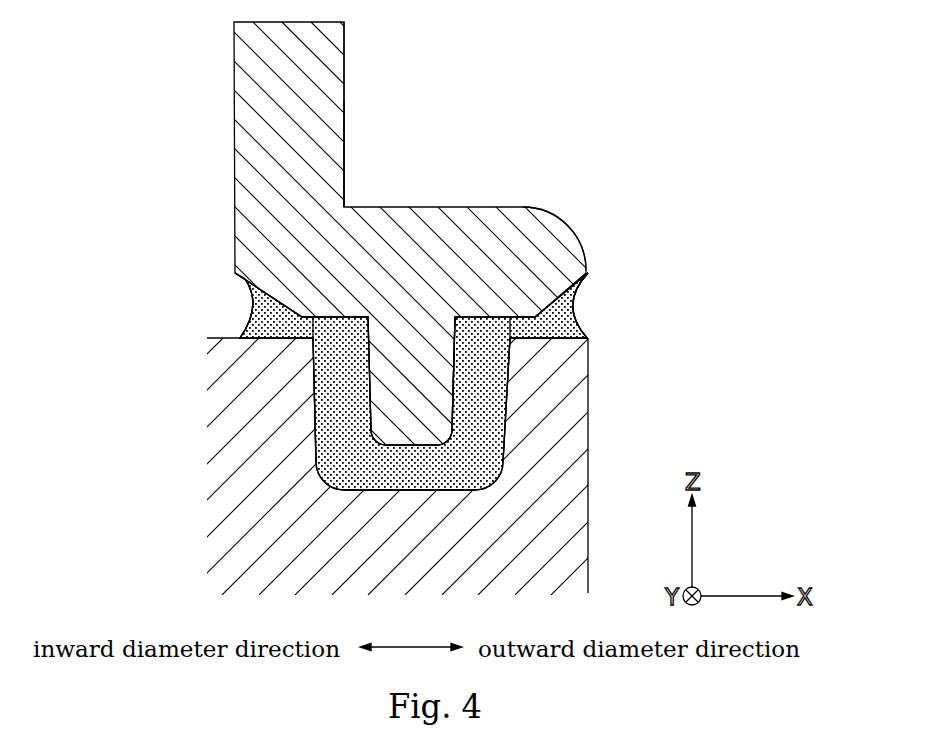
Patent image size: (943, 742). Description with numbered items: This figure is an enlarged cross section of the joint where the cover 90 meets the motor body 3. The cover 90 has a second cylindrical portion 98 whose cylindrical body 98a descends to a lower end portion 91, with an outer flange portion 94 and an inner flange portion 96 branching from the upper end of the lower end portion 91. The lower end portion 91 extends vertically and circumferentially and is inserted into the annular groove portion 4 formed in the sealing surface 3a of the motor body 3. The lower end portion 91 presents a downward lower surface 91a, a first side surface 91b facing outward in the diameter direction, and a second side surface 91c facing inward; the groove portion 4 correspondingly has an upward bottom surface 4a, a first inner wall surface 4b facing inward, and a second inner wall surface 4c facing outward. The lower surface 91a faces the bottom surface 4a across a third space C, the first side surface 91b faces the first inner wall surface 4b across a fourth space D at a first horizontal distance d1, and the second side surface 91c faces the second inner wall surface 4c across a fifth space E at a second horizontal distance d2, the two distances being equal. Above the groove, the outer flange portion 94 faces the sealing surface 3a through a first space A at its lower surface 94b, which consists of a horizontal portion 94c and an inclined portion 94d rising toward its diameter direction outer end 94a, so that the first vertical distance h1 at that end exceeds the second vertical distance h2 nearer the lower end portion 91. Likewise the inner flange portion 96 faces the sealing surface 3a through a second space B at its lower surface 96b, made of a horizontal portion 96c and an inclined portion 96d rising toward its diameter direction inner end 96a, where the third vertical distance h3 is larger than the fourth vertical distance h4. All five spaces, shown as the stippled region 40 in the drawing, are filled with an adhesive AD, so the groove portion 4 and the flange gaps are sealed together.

The cover 90 is at (355, 33).
The second cylindrical portion 98 is at (337, 66).
The cylindrical body 98a is at (337, 120).
The lower end portion 91 is at (400, 420).
The lower surface 91a is at (380, 478).
The first side surface 91b is at (460, 335).
The second side surface 91c is at (342, 320).
The outer flange portion 94 is at (540, 235).
The diameter direction outer end 94a is at (588, 270).
The lower surface 94b is at (668, 276).
The horizontal portion 94c is at (580, 325).
The inclined portion 94d is at (578, 297).
The inner flange portion 96 is at (333, 262).
The diameter direction inner end 96a is at (243, 280).
The lower surface 96b is at (150, 276).
The horizontal portion 96c is at (247, 322).
The inclined portion 96d is at (252, 298).
The seal member (sealing material) 40 is at (655, 444).
The motor body 3 is at (668, 404).
The sealing surface 3a is at (235, 338).
The groove portion 4 is at (413, 457).
The bottom surface 4a is at (495, 485).
The first inner wall surface 4b is at (513, 372).
The second inner wall surface 4c is at (316, 378).
The first space A is at (588, 342).
The second space B is at (313, 342).
The third space C is at (430, 475).
The fourth space D is at (515, 441).
The fifth space E is at (343, 430).
The adhesive AD is at (347, 458).
The first vertical distance h1 is at (588, 271).
The second vertical distance h2 is at (492, 358).
The third vertical distance h3 is at (757, 337).
The fourth vertical distance h4 is at (331, 358).
The first horizontal distance d1 is at (465, 388).
The second horizontal distance d2 is at (358, 388).